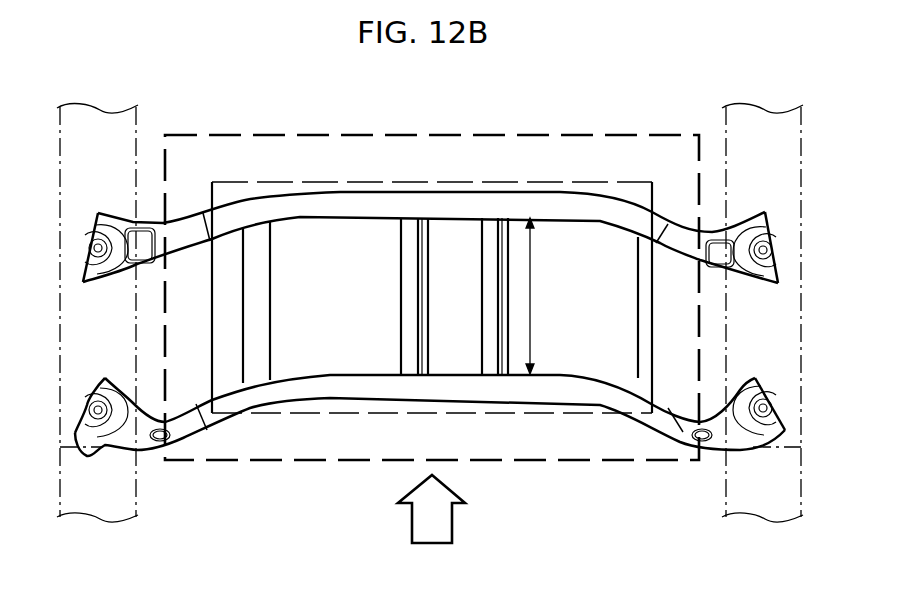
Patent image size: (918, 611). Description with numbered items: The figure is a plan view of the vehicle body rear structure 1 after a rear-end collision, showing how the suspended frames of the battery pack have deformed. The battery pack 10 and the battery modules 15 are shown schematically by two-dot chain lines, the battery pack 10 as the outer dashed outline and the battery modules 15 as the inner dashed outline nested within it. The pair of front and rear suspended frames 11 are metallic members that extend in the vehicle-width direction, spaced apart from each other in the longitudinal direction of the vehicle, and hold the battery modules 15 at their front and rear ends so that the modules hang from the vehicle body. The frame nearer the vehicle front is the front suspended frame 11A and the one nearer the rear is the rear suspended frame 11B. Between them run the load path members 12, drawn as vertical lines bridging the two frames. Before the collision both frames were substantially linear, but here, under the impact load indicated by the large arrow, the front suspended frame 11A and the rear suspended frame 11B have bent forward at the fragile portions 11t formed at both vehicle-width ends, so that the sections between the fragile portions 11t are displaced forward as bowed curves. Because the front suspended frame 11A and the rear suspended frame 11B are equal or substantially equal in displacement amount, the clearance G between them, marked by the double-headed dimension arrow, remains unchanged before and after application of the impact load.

The vehicle body rear structure 1 is at (612, 95).
The battery pack 10 is at (326, 135).
The battery module 15 is at (380, 182).
The suspended frame 11 is at (430, 303).
The front suspended frame 11A is at (458, 205).
The rear suspended frame 11B is at (458, 387).
The fragile portion 11t is at (202, 207).
The load path member 12 is at (268, 300).
The clearance G is at (532, 300).